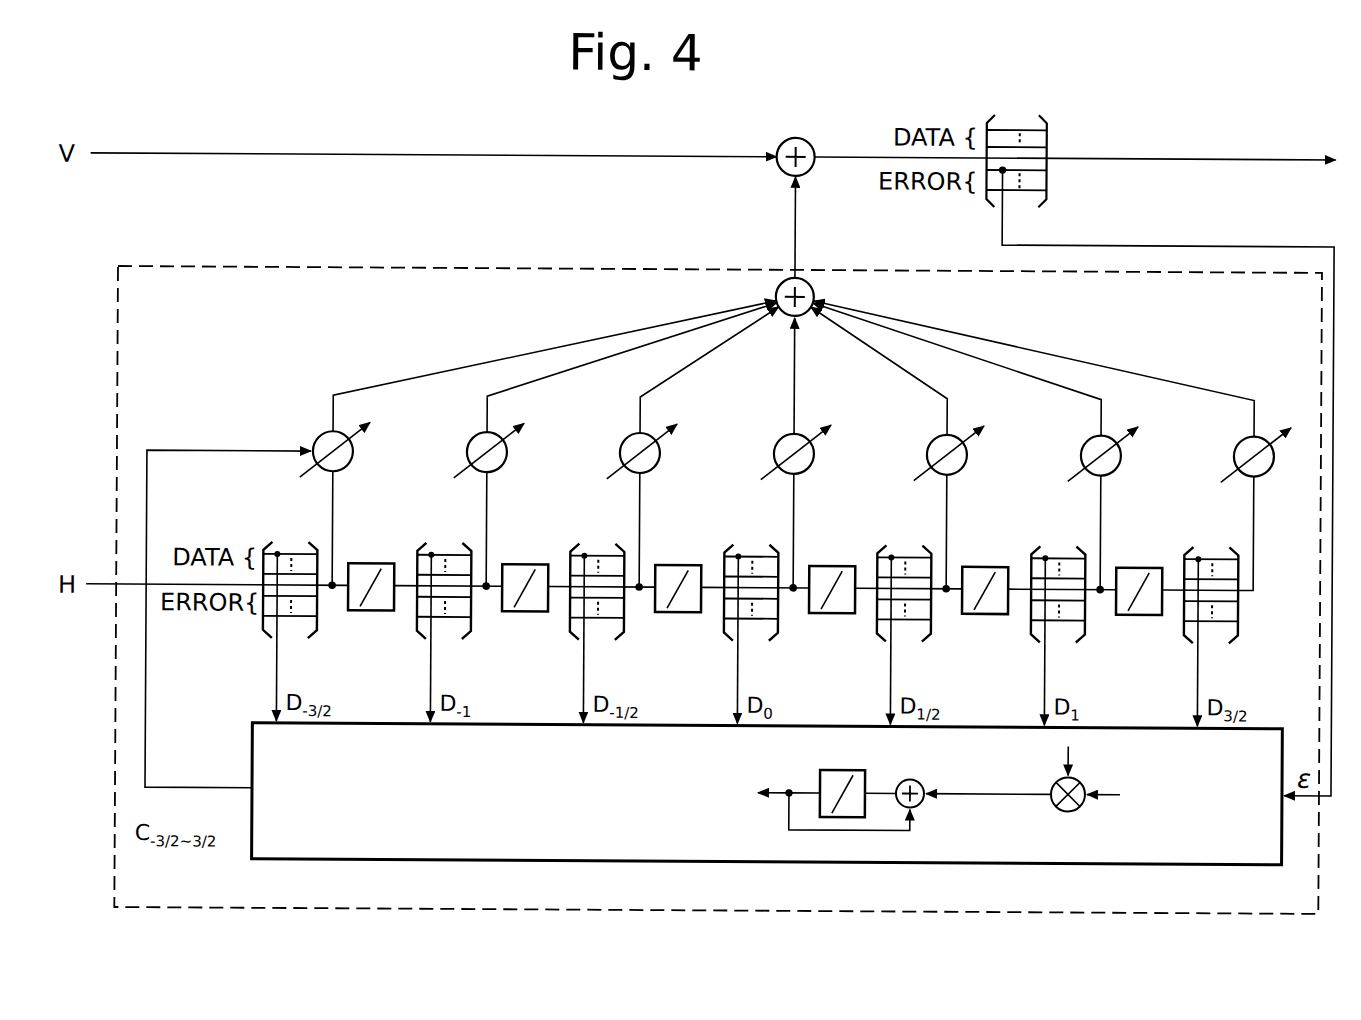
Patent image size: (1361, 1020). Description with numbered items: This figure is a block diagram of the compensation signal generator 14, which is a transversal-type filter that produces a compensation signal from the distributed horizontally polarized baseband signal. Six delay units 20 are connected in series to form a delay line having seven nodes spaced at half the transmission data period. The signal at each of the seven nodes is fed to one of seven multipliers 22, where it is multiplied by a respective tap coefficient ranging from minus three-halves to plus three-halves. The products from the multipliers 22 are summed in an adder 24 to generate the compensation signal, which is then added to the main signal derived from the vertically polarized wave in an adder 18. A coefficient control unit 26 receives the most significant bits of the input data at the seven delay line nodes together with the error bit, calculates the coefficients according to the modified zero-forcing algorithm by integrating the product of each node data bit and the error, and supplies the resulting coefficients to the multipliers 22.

The compensation signal generator 14 is at (355, 266).
The adder 18 is at (808, 140).
The delay units 20 is at (374, 562).
The multipliers 22 is at (323, 434).
The adder 24 is at (815, 293).
The coefficient control unit 26 is at (630, 858).